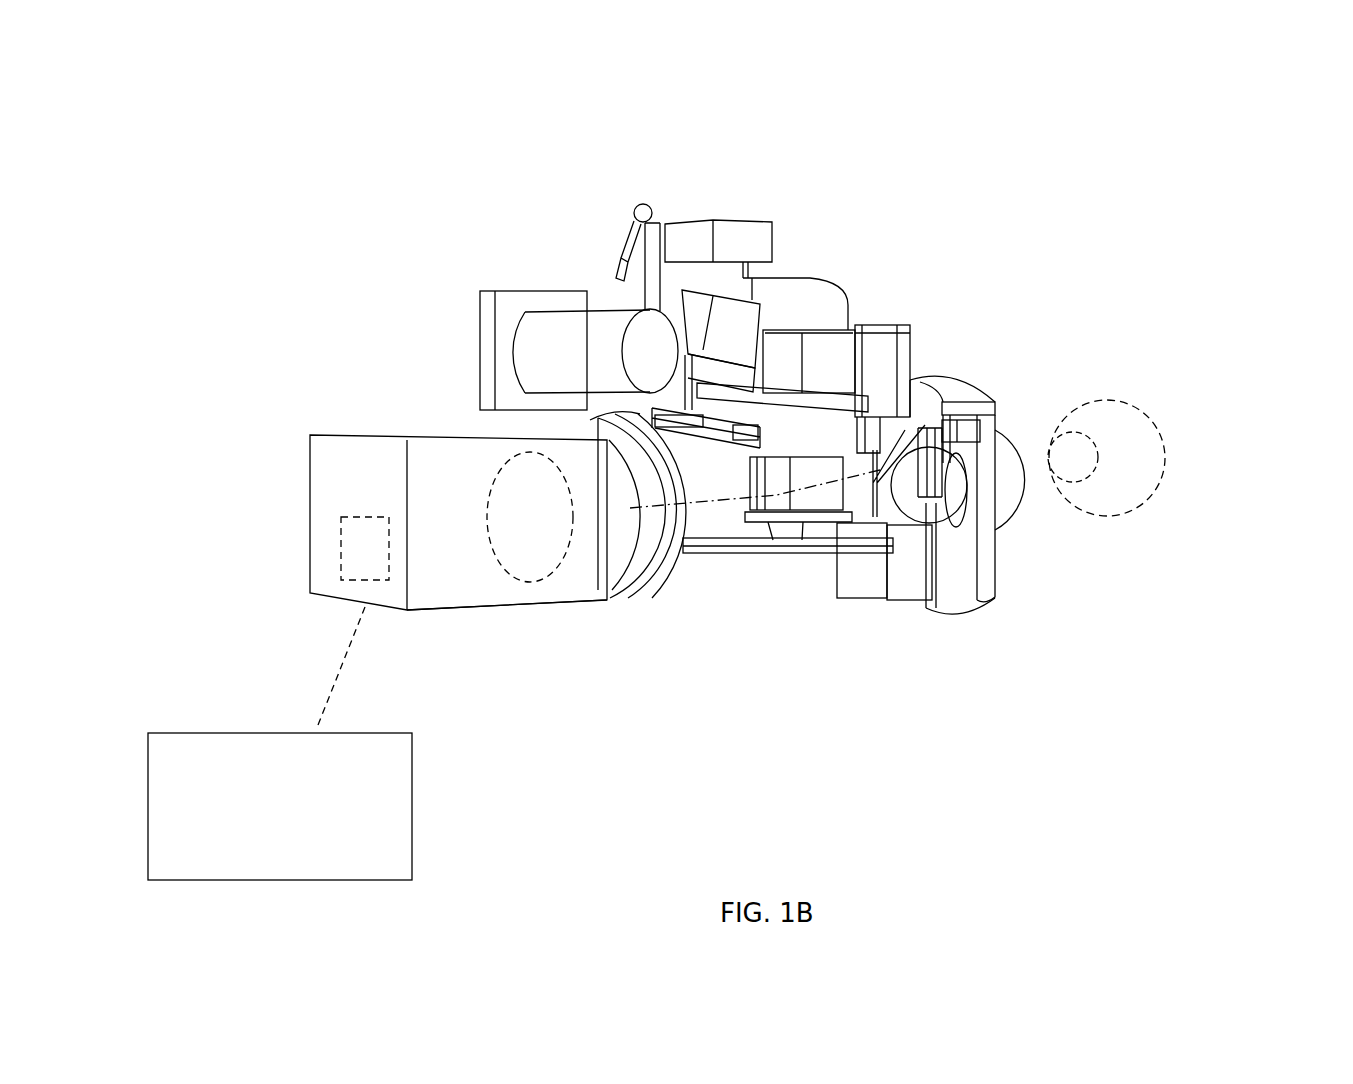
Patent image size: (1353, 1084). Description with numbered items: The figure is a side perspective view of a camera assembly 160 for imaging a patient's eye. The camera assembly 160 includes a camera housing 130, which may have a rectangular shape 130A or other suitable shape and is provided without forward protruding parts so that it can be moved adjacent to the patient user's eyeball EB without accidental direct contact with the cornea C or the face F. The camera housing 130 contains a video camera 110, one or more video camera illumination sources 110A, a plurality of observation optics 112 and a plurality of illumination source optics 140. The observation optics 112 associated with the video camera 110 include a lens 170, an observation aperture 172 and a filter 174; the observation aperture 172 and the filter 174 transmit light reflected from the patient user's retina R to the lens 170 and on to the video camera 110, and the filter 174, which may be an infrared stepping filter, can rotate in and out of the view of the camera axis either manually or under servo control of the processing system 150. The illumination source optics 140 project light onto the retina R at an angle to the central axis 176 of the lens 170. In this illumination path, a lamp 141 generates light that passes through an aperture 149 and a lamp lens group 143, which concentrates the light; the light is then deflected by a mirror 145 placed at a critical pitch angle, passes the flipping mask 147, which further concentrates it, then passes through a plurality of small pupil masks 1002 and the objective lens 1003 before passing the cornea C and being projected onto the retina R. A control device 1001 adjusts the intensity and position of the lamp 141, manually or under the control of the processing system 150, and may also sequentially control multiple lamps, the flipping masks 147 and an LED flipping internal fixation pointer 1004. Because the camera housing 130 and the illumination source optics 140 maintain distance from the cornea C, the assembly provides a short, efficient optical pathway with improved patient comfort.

The camera assembly 160 is at (299, 153).
The control device 1001 is at (634, 218).
The mirror 145 is at (684, 448).
The lamp 141 is at (768, 378).
The lamp lens group 143 is at (777, 398).
The aperture 149 is at (823, 393).
The observation aperture 172 is at (848, 400).
The small pupil masks 1002 is at (940, 385).
The objective lens 1003 is at (1007, 500).
The LED flipping internal fixation pointer 1004 is at (866, 552).
The filter 174 is at (753, 572).
The illumination source optics 140 is at (712, 458).
The central axis 176 is at (690, 500).
The lens 170 is at (654, 610).
The flipping mask 147 is at (927, 512).
The observation optics 112 is at (633, 612).
The video camera 110 is at (536, 588).
The video camera illumination source 110A is at (350, 572).
The camera housing 130 is at (455, 626).
The rectangular shape 130A is at (496, 614).
The processing system 150 is at (280, 743).
The cornea C is at (1052, 414).
The eyeball EB is at (1176, 421).
The face F is at (1256, 430).
The retina R is at (1176, 460).